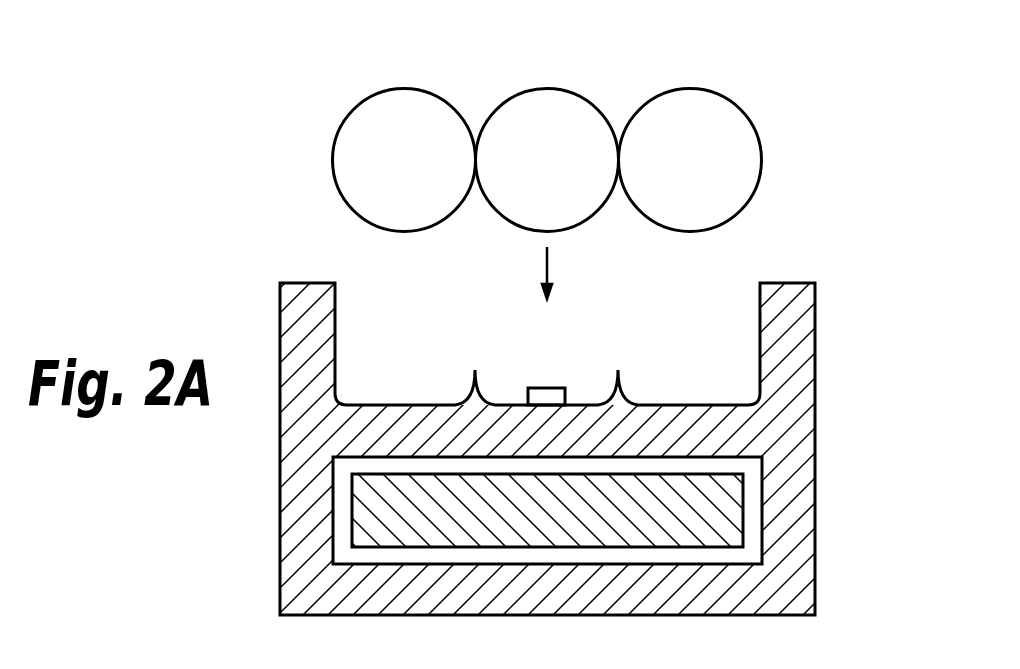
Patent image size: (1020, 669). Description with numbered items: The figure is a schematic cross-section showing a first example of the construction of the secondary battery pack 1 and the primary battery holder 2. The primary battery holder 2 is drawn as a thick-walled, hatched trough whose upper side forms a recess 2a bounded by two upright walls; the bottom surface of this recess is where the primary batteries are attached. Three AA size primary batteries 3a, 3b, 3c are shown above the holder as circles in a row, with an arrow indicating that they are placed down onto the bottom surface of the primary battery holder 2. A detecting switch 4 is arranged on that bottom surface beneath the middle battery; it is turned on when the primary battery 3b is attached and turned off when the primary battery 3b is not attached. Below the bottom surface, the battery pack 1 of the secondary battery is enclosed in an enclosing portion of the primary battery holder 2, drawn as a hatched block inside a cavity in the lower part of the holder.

The battery pack 1 is at (720, 513).
The primary battery holder 2 is at (783, 310).
The recess of container 2a is at (392, 305).
The primary battery 3a is at (406, 97).
The primary battery 3b is at (549, 97).
The primary battery 3c is at (691, 97).
The detecting switch 4 is at (547, 392).